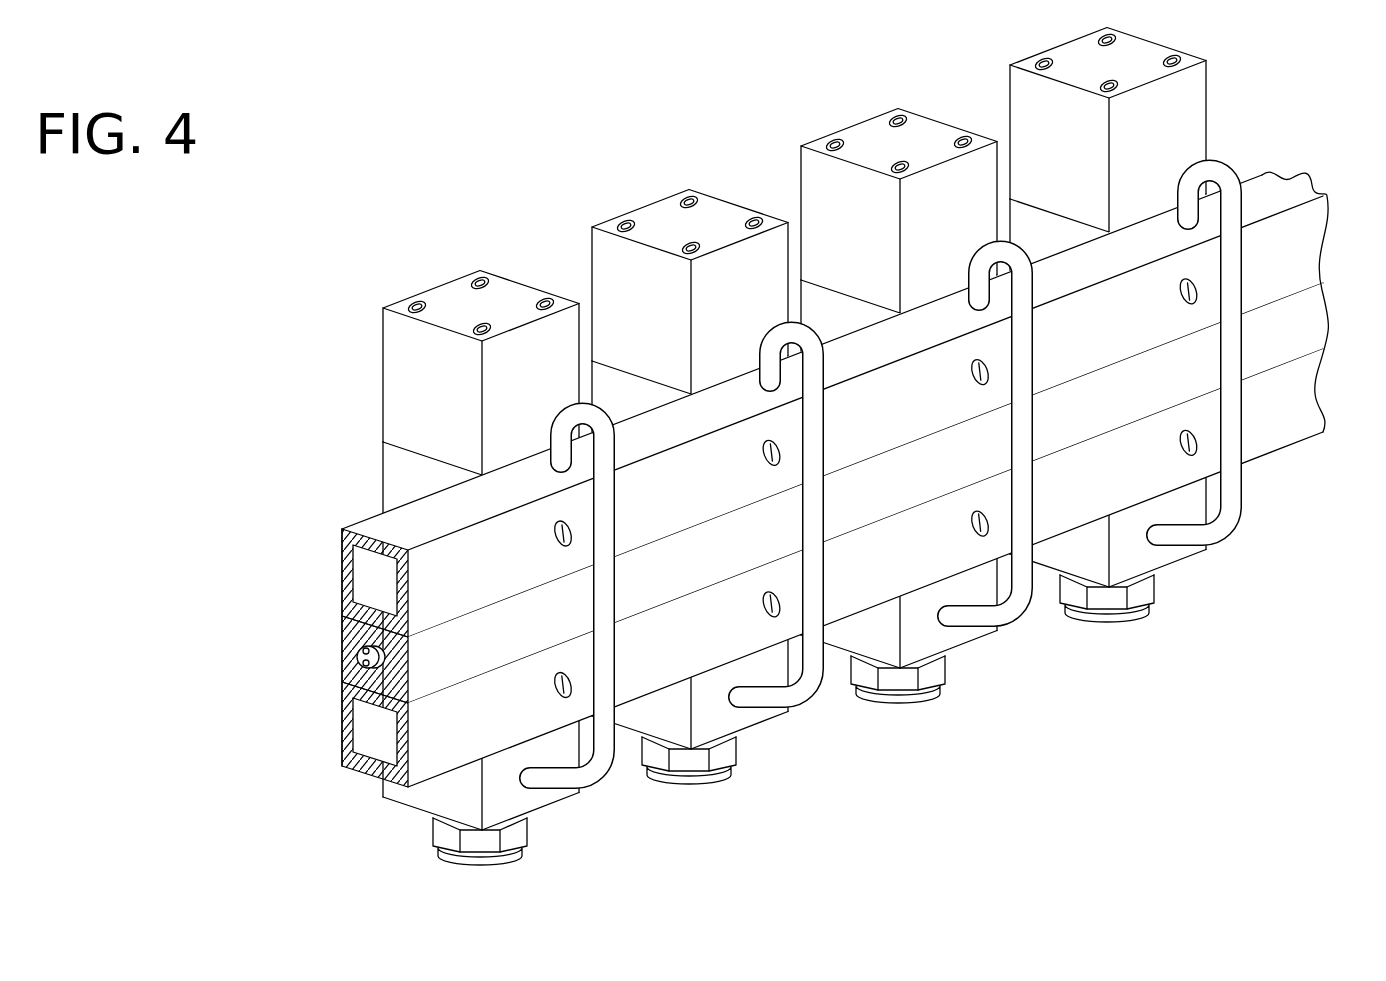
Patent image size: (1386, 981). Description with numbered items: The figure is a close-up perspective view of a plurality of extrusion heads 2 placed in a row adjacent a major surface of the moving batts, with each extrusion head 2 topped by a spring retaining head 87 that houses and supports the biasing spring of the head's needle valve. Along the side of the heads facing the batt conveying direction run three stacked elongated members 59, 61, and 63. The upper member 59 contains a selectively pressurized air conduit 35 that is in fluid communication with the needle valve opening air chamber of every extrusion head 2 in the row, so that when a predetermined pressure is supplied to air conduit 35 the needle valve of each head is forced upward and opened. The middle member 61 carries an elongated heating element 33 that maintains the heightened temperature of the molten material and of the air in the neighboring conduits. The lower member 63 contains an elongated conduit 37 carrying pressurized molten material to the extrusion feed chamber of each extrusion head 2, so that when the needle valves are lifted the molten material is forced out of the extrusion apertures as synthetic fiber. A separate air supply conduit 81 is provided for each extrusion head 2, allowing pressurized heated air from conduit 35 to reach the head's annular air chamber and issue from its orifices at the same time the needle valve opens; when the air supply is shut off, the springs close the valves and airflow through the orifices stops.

The extrusion head 2 is at (819, 447).
The spring retaining head 87 is at (633, 297).
The elongated member 59 is at (817, 406).
The elongated member 61 is at (814, 493).
The elongated member 63 is at (832, 585).
The air conduit 35 is at (352, 580).
The heating element 33 is at (345, 657).
The conduit 37 is at (352, 738).
The air supply conduit 81 is at (608, 688).